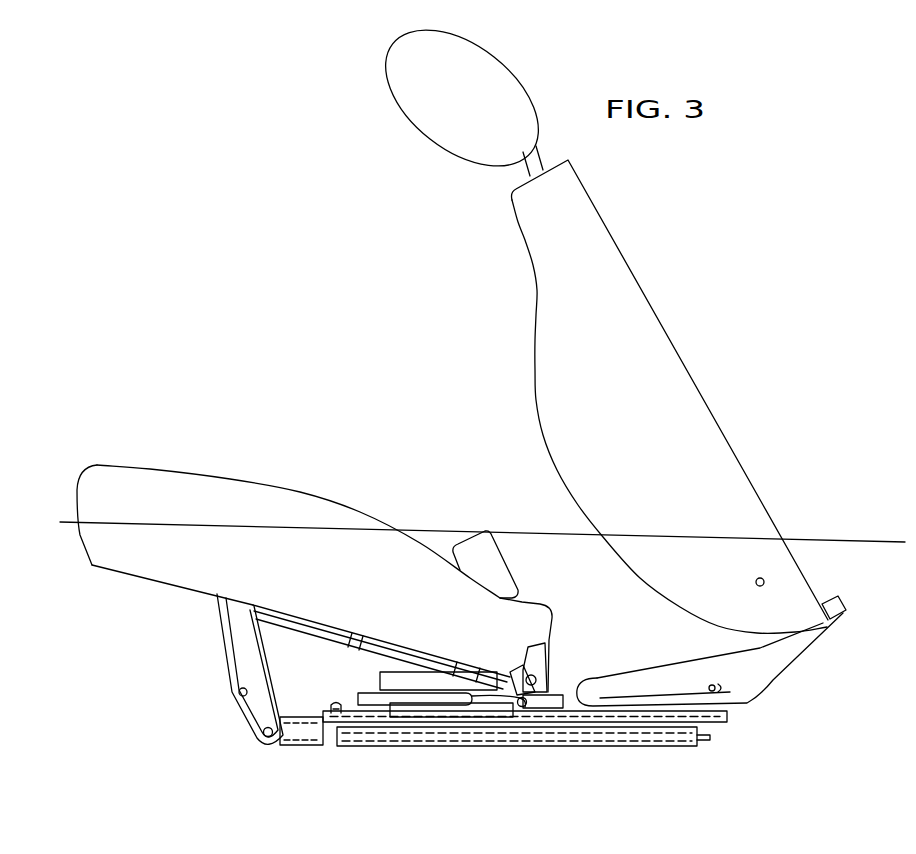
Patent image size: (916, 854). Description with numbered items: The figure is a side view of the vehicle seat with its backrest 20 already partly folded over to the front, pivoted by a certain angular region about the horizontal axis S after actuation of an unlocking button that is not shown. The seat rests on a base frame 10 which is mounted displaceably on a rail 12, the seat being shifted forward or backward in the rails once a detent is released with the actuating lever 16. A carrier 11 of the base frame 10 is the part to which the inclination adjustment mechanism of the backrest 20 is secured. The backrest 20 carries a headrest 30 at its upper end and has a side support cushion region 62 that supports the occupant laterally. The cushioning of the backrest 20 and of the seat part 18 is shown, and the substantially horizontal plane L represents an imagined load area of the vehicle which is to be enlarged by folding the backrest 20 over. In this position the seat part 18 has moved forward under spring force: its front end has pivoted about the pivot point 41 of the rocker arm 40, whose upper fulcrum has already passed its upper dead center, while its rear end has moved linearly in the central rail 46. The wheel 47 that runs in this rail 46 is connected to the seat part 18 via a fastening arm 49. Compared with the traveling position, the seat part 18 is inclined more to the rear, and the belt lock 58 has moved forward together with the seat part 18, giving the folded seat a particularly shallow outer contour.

The plane L is at (880, 540).
The horizontal axis S is at (755, 582).
The base frame 10 is at (307, 734).
The carrier 11 is at (767, 665).
The rail 12 is at (463, 733).
The actuating lever 16 is at (357, 698).
The seat part 18 is at (320, 638).
The backrest 20 is at (666, 396).
The headrest 30 is at (430, 95).
The rocker arm 40 is at (237, 642).
The pivot point 41 is at (265, 742).
The rail 46 is at (427, 712).
The wheel 47 is at (517, 722).
The fastening arm 49 is at (549, 663).
The belt lock 58 is at (498, 562).
The side support cushion region 62 is at (557, 468).